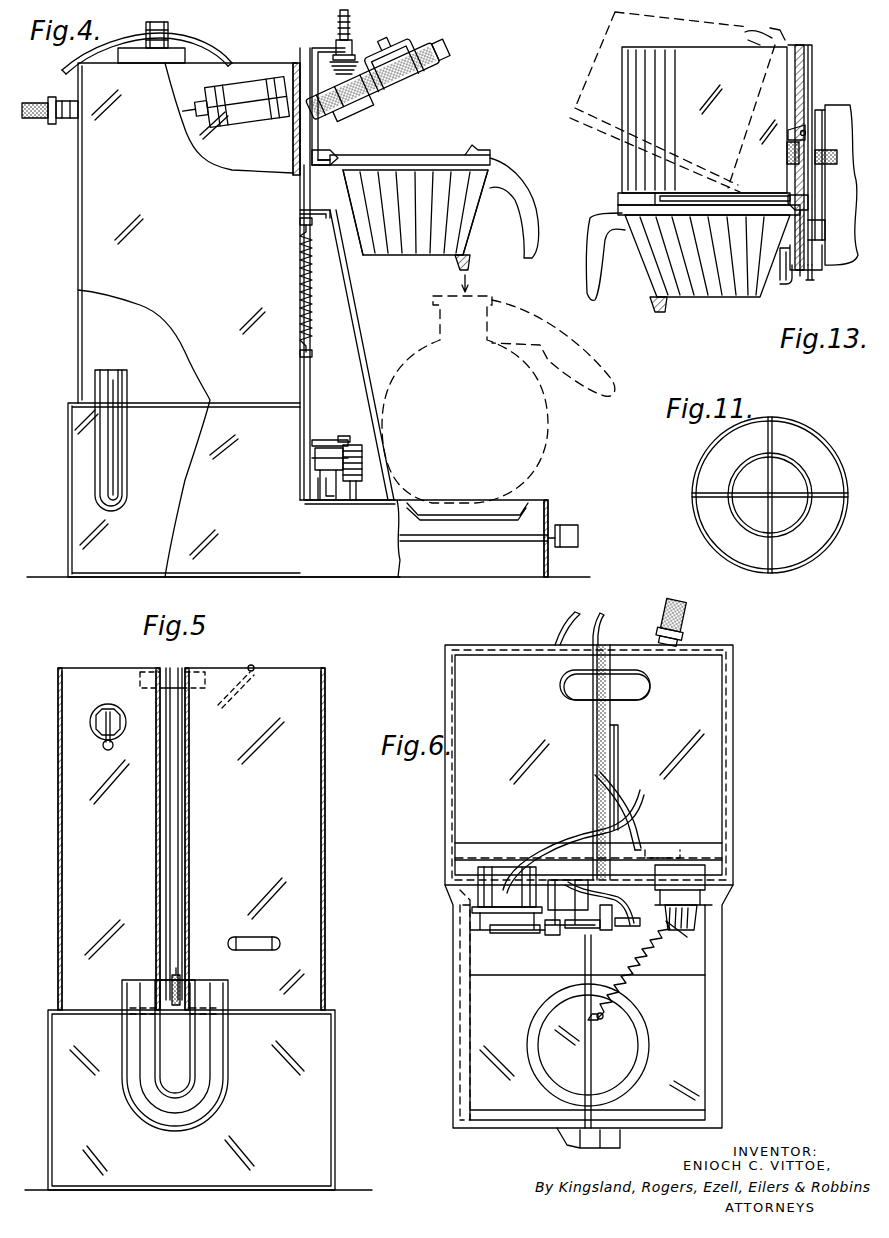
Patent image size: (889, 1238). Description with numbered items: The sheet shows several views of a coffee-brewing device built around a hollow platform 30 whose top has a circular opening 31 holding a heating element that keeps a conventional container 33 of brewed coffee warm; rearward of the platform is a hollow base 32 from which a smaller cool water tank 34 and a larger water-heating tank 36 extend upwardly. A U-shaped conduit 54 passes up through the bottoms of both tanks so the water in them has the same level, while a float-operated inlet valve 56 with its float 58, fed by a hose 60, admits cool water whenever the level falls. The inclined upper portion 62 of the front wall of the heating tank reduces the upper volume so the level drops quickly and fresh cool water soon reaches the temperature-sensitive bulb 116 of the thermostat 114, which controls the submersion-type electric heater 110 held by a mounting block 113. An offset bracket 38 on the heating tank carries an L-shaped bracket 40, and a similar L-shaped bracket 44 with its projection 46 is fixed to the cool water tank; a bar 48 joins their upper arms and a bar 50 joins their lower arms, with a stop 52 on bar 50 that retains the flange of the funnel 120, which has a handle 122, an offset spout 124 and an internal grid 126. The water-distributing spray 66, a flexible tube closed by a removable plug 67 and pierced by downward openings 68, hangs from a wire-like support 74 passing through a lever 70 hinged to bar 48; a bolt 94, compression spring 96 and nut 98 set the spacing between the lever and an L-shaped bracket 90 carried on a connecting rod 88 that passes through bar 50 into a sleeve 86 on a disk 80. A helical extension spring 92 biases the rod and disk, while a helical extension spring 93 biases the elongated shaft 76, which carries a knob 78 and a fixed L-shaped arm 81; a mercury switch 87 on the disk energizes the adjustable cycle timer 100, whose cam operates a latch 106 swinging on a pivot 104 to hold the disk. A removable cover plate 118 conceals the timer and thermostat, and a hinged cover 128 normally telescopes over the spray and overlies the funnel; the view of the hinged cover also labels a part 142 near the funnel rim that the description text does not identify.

In FIG. 4, the platform 30 is at (378, 565).
In FIG. 6, the platform 30 is at (700, 1070).
In FIG. 4, the circular opening 31 is at (526, 510).
In FIG. 6, the circular opening 31 is at (650, 1045).
In FIG. 4, the base 32 is at (243, 426).
In FIG. 5, the base 32 is at (340, 1095).
In FIG. 4, the container for brewed coffee 33 is at (550, 430).
In FIG. 4, the cool water tank 34 is at (80, 250).
In FIG. 13, the cool water tank 34 is at (828, 108).
In FIG. 5, the cool water tank 34 is at (66, 880).
In FIG. 6, the cool water tank 34 is at (700, 775).
In FIG. 13, the water-heating tank 36 is at (827, 272).
In FIG. 5, the water-heating tank 36 is at (322, 880).
In FIG. 6, the water-heating tank 36 is at (470, 790).
In FIG. 13, the bracket 38 is at (816, 228).
In FIG. 13, the L-shaped bracket 40 is at (640, 206).
In FIG. 4, the L-shaped bracket 44 is at (293, 140).
In FIG. 4, the projection 46 is at (476, 150).
In FIG. 4, the bar 48 is at (300, 48).
In FIG. 13, the bar 48 is at (806, 110).
In FIG. 4, the bar 50 is at (318, 168).
In FIG. 13, the bar 50 is at (800, 212).
In FIG. 4, the stop 52 is at (332, 150).
In FIG. 13, the stop 52 is at (798, 195).
In FIG. 4, the U-shaped conduit 54 is at (108, 496).
In FIG. 5, the U-shaped conduit 54 is at (215, 1075).
In FIG. 6, the U-shaped conduit 54 is at (640, 688).
In FIG. 5, the float-operated inlet valve 56 is at (104, 708).
In FIG. 4, the float 58 is at (253, 80).
In FIG. 4, the hose 60 is at (38, 100).
In FIG. 6, the hose 60 is at (683, 615).
In FIG. 13, the upper portion of front wall 62 is at (832, 158).
In FIG. 4, the water-distributing spray 66 is at (422, 75).
In FIG. 13, the water-distributing spray 66 is at (792, 152).
In FIG. 4, the removable plug 67 is at (442, 40).
In FIG. 4, the openings 68 is at (430, 60).
In FIG. 4, the lever 70 is at (385, 55).
In FIG. 13, the lever 70 is at (788, 135).
In FIG. 4, the wire-like support 74 is at (406, 50).
In FIG. 4, the elongated shaft 76 is at (485, 545).
In FIG. 6, the elongated shaft 76 is at (595, 1070).
In FIG. 4, the knob 78 is at (578, 540).
In FIG. 6, the knob 78 is at (566, 1143).
In FIG. 6, the disk 80 is at (560, 925).
In FIG. 6, the L-shaped arm 81 is at (578, 930).
In FIG. 6, the sleeve 86 is at (562, 880).
In FIG. 6, the mercury switch 87 is at (606, 932).
In FIG. 4, the connecting rod 88 is at (300, 188).
In FIG. 13, the connecting rod 88 is at (810, 280).
In FIG. 6, the connecting rod 88 is at (515, 860).
In FIG. 4, the L-shaped bracket 90 is at (318, 46).
In FIG. 13, the L-shaped bracket 90 is at (800, 95).
In FIG. 4, the helical extension spring 92 is at (300, 285).
In FIG. 6, the helical extension spring 93 is at (645, 988).
In FIG. 4, the bolt 94 is at (349, 24).
In FIG. 4, the helical compression spring 96 is at (372, 92).
In FIG. 4, the nut 98 is at (340, 44).
In FIG. 4, the adjustable cycle timer 100 is at (336, 486).
In FIG. 6, the adjustable cycle timer 100 is at (485, 900).
In FIG. 4, the pivot 104 is at (330, 502).
In FIG. 6, the pivot 104 is at (652, 854).
In FIG. 4, the latch 106 is at (341, 436).
In FIG. 6, the latch 106 is at (622, 926).
In FIG. 5, the submersion-type electric heater 110 is at (282, 940).
In FIG. 4, the mounting block 113 is at (185, 62).
In FIG. 4, the thermostat 114 is at (303, 475).
In FIG. 6, the thermostat 114 is at (697, 875).
In FIG. 6, the temperature-sensitive bulb 116 is at (616, 735).
In FIG. 4, the removable cover plate 118 is at (355, 315).
In FIG. 13, the removable cover plate 118 is at (790, 272).
In FIG. 4, the funnel 120 is at (452, 232).
In FIG. 13, the funnel 120 is at (730, 287).
In FIG. 4, the handle 122 is at (528, 252).
In FIG. 13, the handle 122 is at (597, 278).
In FIG. 4, the spout 124 is at (455, 262).
In FIG. 13, the spout 124 is at (666, 306).
In FIG. 11, the grid 126 is at (805, 587).
In FIG. 13, the cover 128 is at (578, 100).
In FIG. 13, the retaining bar 142 is at (650, 197).